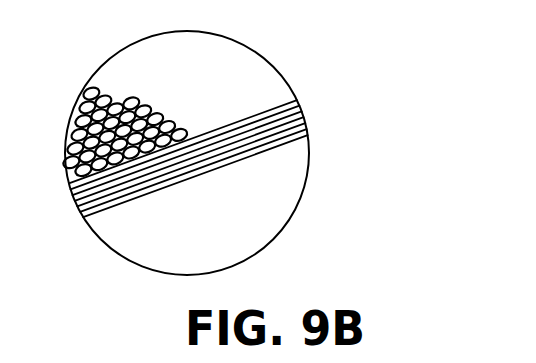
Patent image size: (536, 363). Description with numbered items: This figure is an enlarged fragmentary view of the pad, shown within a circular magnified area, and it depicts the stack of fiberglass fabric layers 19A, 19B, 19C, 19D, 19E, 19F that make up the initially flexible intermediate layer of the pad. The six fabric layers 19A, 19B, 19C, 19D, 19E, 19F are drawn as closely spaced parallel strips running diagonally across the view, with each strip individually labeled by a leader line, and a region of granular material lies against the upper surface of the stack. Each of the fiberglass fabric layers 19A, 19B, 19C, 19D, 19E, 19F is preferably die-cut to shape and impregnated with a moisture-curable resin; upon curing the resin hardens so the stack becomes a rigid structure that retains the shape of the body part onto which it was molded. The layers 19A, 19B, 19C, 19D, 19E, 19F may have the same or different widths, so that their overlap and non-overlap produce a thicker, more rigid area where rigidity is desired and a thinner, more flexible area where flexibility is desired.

The fiberglass fabric layer 19A is at (296, 98).
The fiberglass fabric layer 19B is at (298, 104).
The fiberglass fabric layer 19C is at (300, 110).
The fiberglass fabric layer 19D is at (302, 116).
The fiberglass fabric layer 19E is at (300, 115).
The fiberglass fabric layer 19F is at (302, 118).